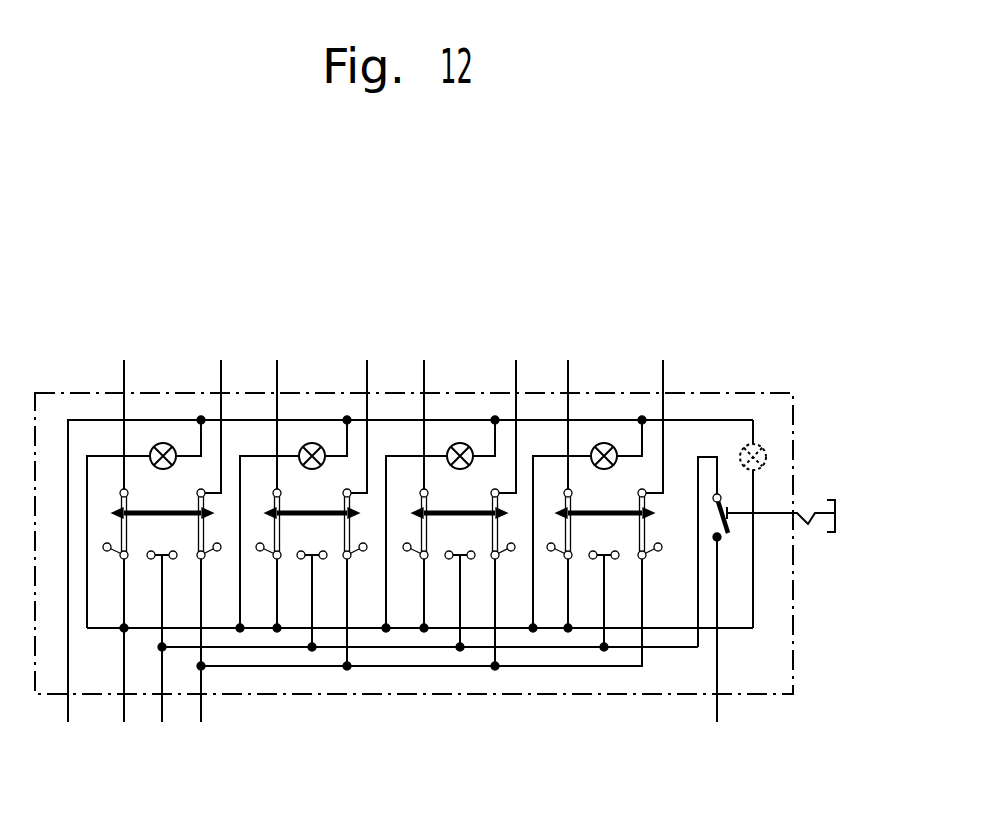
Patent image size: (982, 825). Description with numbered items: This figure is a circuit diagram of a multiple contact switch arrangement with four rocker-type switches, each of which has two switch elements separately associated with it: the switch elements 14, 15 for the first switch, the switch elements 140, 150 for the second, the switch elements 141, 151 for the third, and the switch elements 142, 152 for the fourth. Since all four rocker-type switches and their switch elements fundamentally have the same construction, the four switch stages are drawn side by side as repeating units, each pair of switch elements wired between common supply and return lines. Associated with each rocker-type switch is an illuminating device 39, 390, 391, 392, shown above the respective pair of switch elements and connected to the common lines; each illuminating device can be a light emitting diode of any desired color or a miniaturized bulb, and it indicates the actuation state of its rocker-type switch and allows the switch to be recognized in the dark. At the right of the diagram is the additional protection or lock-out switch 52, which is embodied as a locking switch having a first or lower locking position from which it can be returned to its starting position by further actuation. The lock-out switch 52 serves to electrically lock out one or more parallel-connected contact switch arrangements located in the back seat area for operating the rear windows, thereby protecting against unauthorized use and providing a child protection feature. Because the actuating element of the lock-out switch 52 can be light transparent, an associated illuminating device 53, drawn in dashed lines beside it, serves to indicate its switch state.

The illuminating device 39 is at (167, 443).
The illuminating device 390 is at (318, 443).
The illuminating device 391 is at (465, 443).
The illuminating device 392 is at (609, 443).
The switch element 15 is at (128, 532).
The switch element 14 is at (204, 532).
The switch element 150 is at (281, 532).
The switch element 140 is at (350, 532).
The switch element 151 is at (428, 532).
The switch element 141 is at (498, 532).
The switch element 152 is at (572, 532).
The switch element 142 is at (645, 532).
The illuminating device 53 is at (764, 449).
The protection or lock-out switch 52 is at (729, 510).